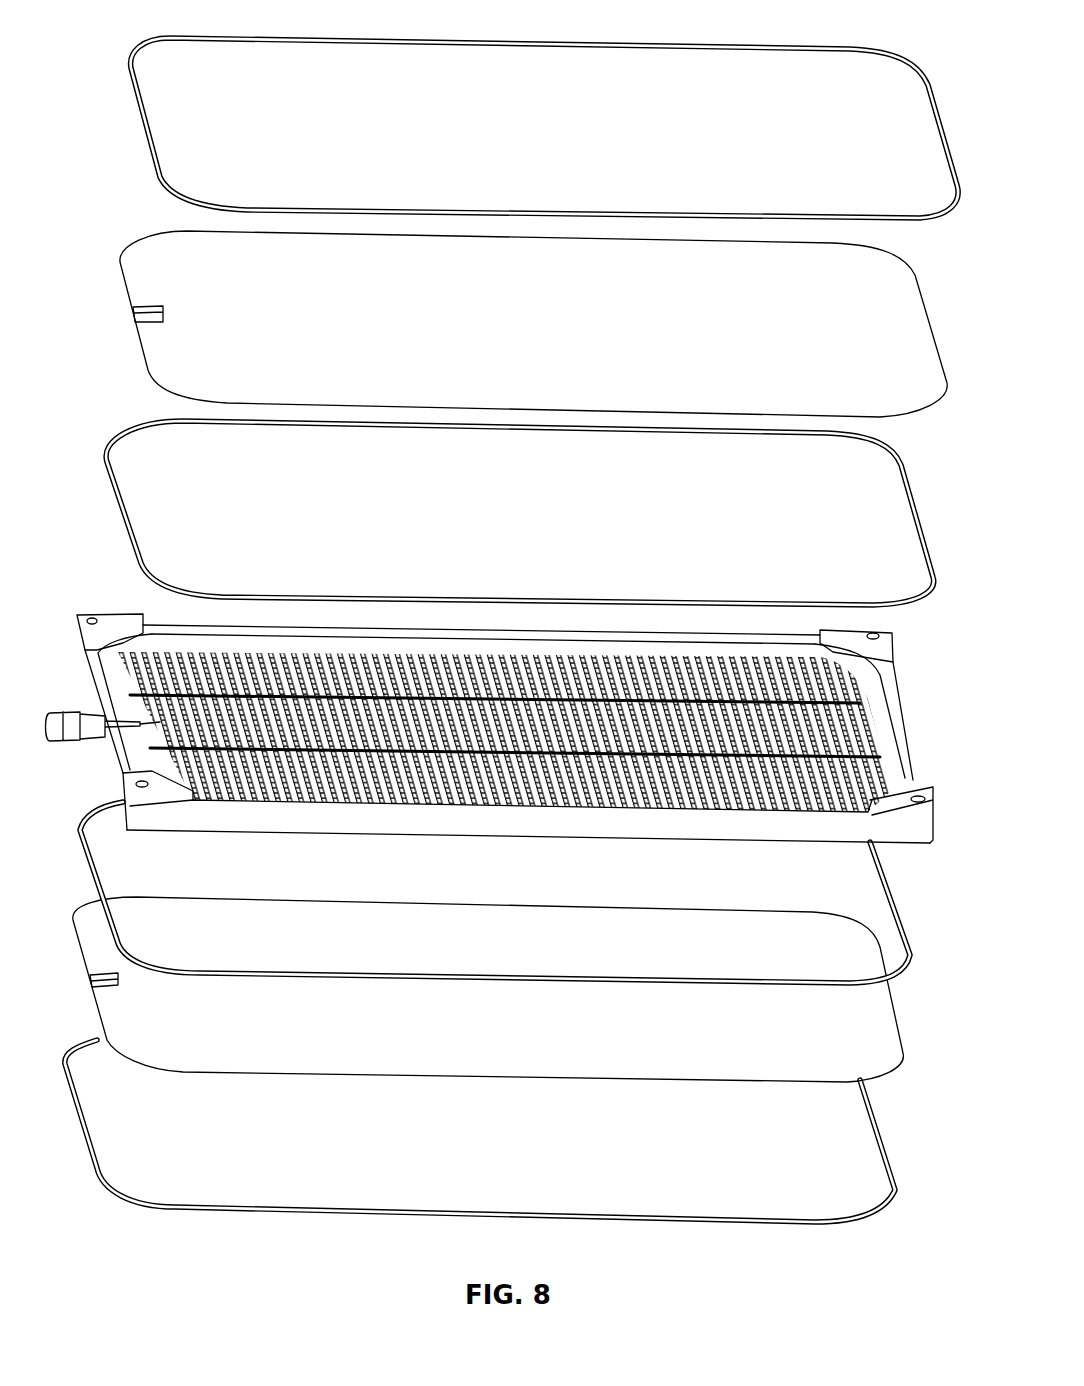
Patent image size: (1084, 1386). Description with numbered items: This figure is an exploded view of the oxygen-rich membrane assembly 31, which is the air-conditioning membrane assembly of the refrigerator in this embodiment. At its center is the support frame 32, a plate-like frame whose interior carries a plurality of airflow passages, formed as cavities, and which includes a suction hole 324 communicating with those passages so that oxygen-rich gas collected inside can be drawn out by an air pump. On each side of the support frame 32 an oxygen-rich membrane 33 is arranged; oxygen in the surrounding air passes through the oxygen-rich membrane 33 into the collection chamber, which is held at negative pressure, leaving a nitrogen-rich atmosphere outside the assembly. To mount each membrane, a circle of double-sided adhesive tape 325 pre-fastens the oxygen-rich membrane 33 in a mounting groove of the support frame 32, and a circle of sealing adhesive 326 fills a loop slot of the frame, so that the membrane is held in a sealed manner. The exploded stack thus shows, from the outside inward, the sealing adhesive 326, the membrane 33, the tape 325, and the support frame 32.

The oxygen-rich membrane assembly 31 is at (501, 611).
The support frame 32 is at (505, 704).
The oxygen-rich membrane 33 is at (496, 631).
The suction hole 324 is at (103, 756).
The double-sided adhesive tape 325 is at (507, 677).
The sealing adhesive 326 is at (502, 630).